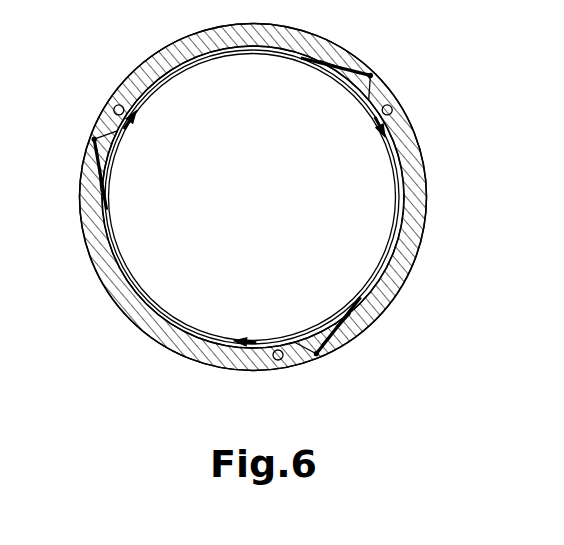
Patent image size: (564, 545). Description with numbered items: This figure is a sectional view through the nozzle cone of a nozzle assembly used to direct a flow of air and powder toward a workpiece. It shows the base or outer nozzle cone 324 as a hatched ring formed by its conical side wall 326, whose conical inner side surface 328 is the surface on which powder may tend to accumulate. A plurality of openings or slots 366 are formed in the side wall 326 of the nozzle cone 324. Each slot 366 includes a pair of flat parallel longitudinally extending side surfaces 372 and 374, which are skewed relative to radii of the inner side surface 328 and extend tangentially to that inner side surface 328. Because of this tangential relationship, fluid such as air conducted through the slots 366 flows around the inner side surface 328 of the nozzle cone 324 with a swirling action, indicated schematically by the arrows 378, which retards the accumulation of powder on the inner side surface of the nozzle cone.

The outer nozzle cone 324 is at (429, 185).
The conical side wall 326 is at (145, 78).
The conical inner side surface 328 is at (208, 46).
The openings 366 is at (90, 177).
The side surface 372 is at (95, 190).
The side surface 374 is at (120, 108).
The arrows 378 is at (160, 82).